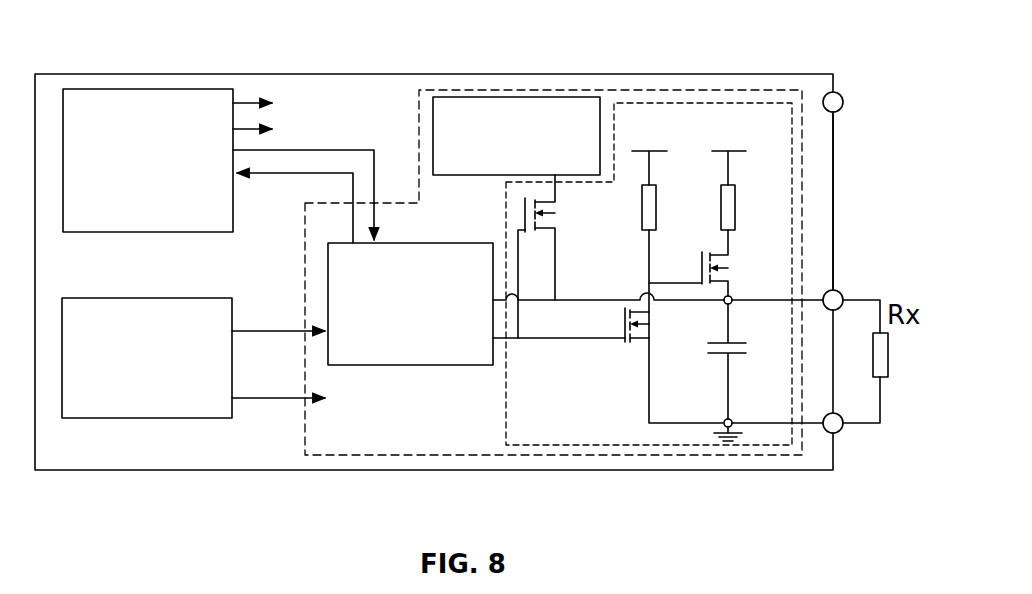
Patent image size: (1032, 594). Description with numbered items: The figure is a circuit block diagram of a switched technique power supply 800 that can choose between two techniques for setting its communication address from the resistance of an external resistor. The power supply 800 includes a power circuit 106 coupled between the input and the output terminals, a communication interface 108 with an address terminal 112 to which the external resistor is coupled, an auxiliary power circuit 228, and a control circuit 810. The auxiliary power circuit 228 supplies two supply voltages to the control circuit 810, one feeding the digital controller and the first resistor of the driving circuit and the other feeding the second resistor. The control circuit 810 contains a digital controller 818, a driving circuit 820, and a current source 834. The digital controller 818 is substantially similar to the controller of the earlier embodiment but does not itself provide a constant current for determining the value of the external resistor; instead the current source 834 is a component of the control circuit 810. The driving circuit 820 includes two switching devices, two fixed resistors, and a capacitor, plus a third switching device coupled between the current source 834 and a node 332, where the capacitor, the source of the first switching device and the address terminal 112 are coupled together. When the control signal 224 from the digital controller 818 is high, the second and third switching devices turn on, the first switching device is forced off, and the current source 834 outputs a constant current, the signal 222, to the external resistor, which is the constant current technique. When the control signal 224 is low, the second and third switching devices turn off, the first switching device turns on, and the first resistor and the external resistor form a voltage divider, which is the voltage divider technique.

The switched technique power supply 800 is at (105, 73).
The power circuit 106 is at (217, 88).
The current source 834 is at (557, 96).
The communication interface 108 is at (850, 259).
The address terminal 112 is at (843, 294).
The digital controller 818 is at (425, 366).
The driving circuit 820 is at (505, 420).
The control circuit 810 is at (545, 458).
The auxiliary power circuit 228 is at (102, 418).
The signal 222 is at (603, 297).
The control signal 224 is at (600, 340).
The node 332 is at (727, 304).